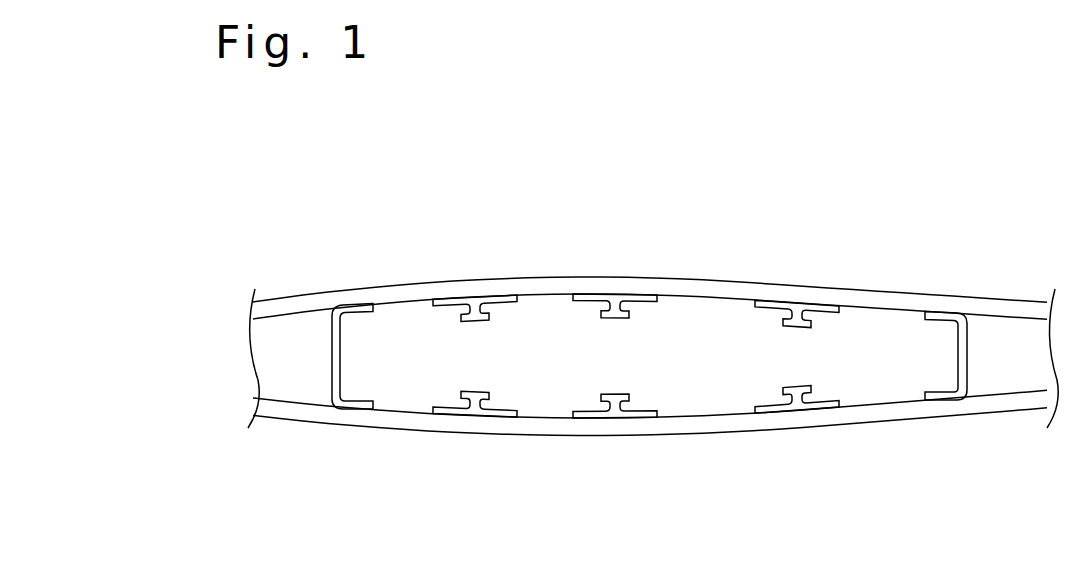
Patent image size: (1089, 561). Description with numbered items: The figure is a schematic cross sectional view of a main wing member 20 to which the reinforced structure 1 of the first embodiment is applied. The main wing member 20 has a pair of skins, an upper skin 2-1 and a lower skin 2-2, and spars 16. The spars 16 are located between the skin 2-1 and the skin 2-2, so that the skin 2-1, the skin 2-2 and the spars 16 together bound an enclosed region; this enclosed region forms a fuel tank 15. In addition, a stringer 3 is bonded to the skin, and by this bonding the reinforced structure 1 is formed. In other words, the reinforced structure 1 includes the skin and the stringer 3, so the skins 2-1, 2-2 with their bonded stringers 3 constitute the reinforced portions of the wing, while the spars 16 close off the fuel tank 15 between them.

The main wing member 20 is at (807, 197).
The reinforced structure 1 is at (615, 209).
The skin 2-1 is at (602, 277).
The skin 2-2 is at (557, 437).
The stringer 3 is at (486, 301).
The fuel tank 15 is at (708, 316).
The spar 16 is at (332, 352).